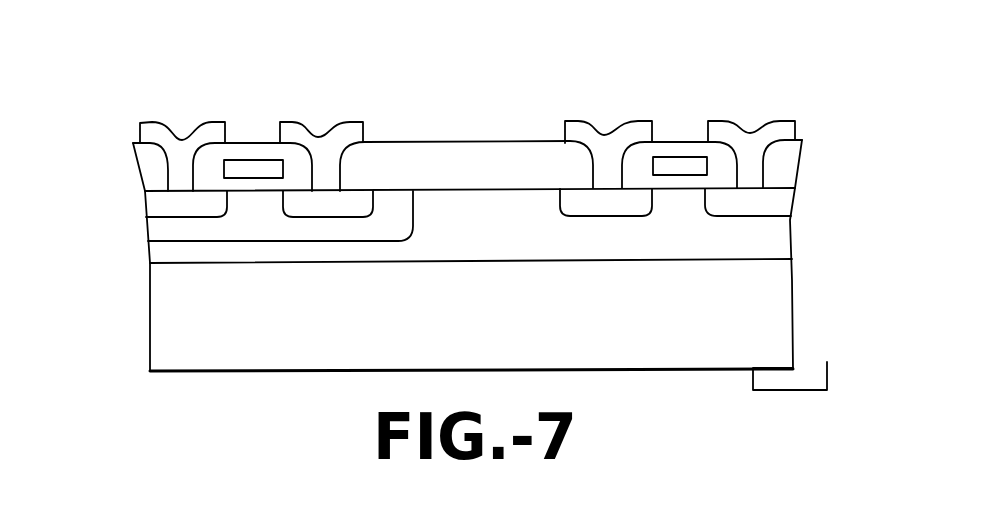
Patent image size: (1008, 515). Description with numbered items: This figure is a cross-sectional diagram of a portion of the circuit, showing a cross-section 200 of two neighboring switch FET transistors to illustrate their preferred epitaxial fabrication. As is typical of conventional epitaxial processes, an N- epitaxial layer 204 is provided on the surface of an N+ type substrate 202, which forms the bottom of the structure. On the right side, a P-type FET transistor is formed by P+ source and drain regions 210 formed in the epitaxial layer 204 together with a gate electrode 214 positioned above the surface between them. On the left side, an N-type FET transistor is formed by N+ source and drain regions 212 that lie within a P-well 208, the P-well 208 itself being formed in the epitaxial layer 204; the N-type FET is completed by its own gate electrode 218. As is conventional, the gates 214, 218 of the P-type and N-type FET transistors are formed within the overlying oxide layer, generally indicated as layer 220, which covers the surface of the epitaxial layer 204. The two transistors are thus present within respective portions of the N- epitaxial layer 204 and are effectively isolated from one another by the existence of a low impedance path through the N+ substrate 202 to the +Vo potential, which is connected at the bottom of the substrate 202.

The cross-section 200 is at (316, 42).
The N+ type substrate 202 is at (377, 357).
The N- epitaxial layer 204 is at (147, 262).
The P-well 208 is at (150, 233).
The P+ source and drain regions 210 is at (713, 212).
The N+ source and drain regions 212 is at (193, 218).
The gate electrode 214 is at (679, 160).
The gate electrode 218 is at (258, 164).
The oxide layer 220 is at (447, 142).